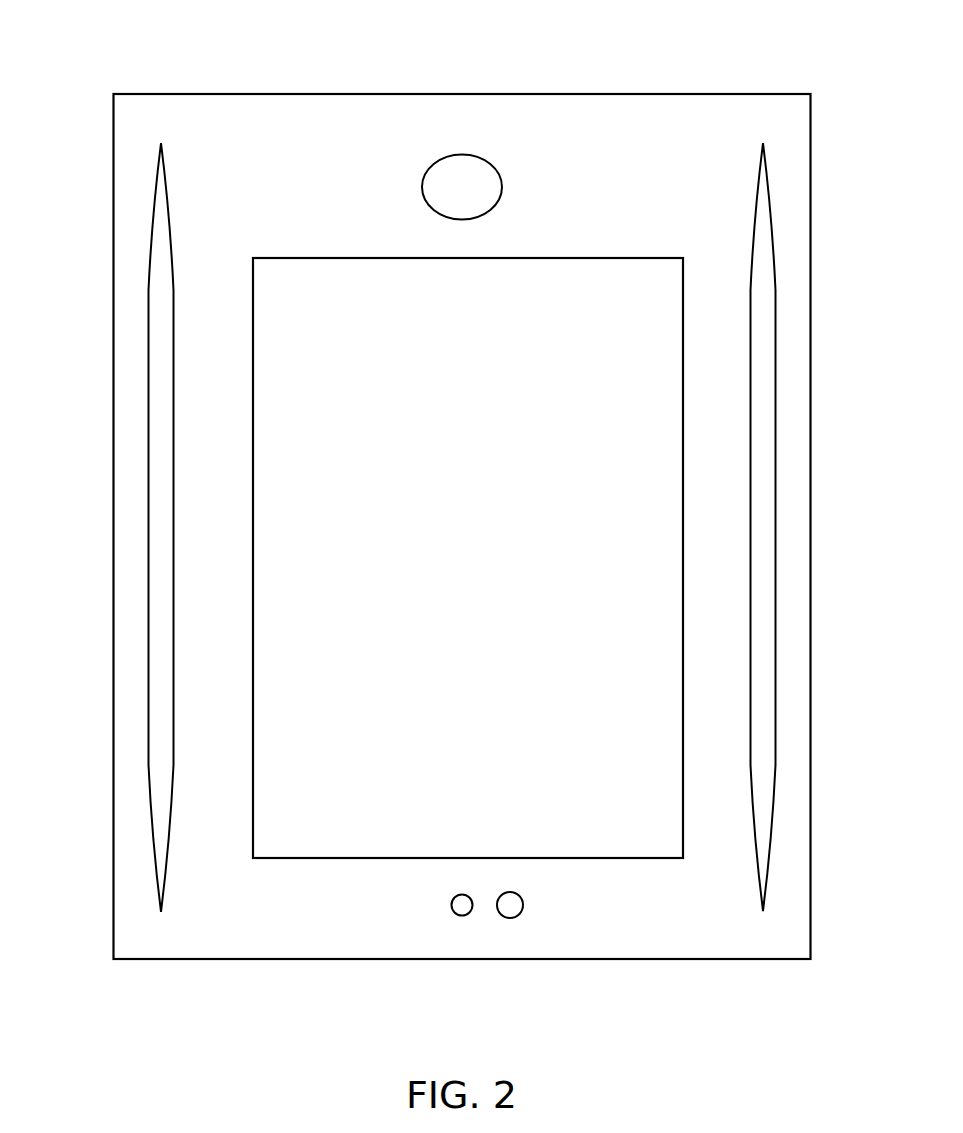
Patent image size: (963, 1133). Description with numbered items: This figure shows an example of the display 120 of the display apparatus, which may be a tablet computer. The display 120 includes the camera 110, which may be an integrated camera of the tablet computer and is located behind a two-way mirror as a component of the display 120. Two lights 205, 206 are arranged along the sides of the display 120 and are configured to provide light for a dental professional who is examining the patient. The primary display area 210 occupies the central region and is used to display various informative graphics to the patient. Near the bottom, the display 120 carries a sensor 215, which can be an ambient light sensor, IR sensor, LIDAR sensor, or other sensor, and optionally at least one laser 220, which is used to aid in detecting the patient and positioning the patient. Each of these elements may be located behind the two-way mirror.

The display 120 is at (128, 38).
The camera 110 is at (462, 154).
The primary display area 210 is at (355, 257).
The light 205 is at (165, 177).
The light 206 is at (757, 196).
The laser 220 is at (451, 905).
The sensor 215 is at (510, 918).